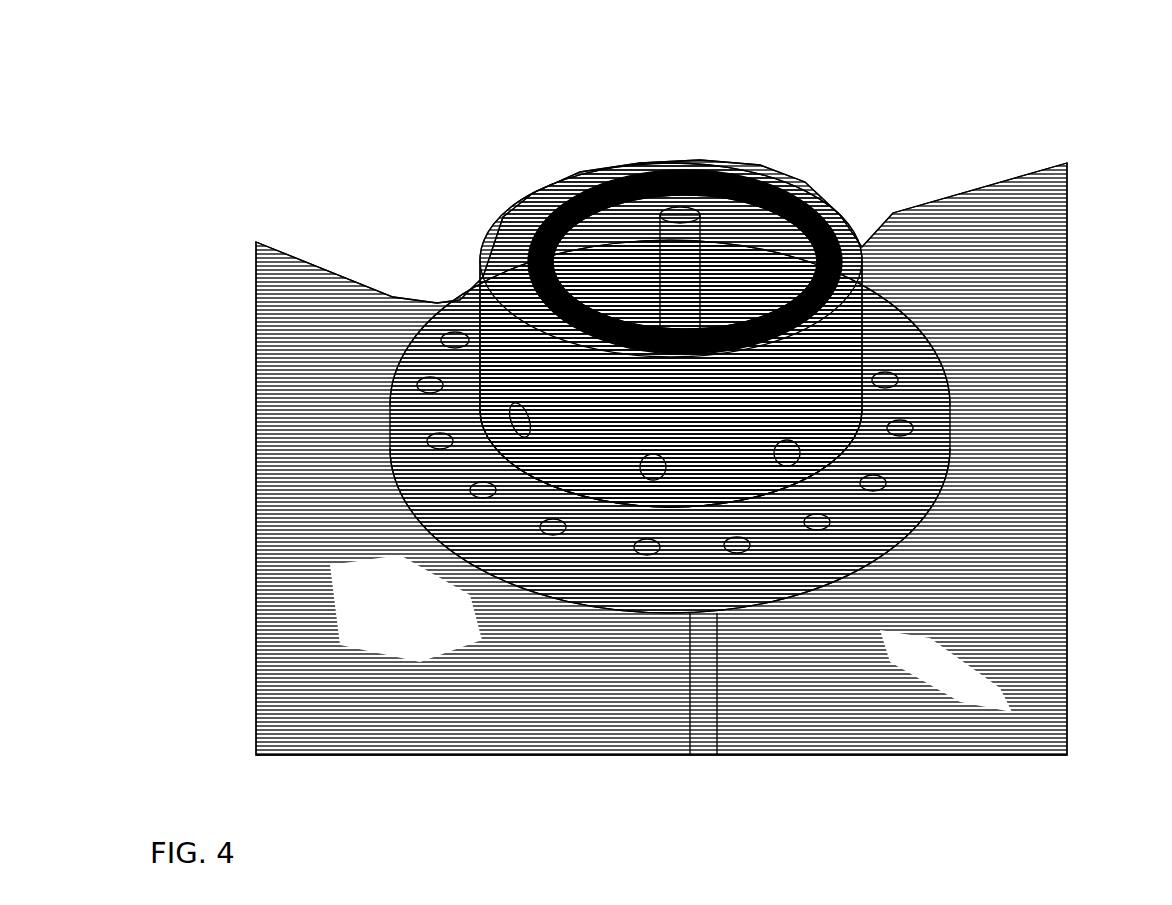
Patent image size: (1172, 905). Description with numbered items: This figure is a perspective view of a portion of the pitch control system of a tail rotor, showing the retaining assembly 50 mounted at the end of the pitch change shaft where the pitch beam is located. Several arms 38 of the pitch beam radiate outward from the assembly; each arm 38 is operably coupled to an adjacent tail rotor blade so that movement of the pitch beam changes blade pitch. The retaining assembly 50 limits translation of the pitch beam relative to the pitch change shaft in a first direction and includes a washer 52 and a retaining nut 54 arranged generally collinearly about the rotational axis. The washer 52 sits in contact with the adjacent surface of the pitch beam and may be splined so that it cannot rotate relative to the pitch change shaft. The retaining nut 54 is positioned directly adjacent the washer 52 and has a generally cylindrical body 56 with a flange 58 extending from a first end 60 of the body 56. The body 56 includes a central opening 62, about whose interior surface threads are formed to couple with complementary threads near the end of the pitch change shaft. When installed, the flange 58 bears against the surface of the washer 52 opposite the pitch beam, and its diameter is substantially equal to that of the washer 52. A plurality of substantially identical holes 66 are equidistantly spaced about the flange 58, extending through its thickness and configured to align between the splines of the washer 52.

The arms 38 is at (1033, 200).
The retaining assembly 50 is at (362, 125).
The washer 52 is at (765, 608).
The retaining nut 54 is at (487, 213).
The body 56 is at (840, 398).
The flange 58 is at (913, 465).
The first end 60 is at (857, 447).
The central opening 62 is at (790, 198).
The holes 66 is at (478, 485).